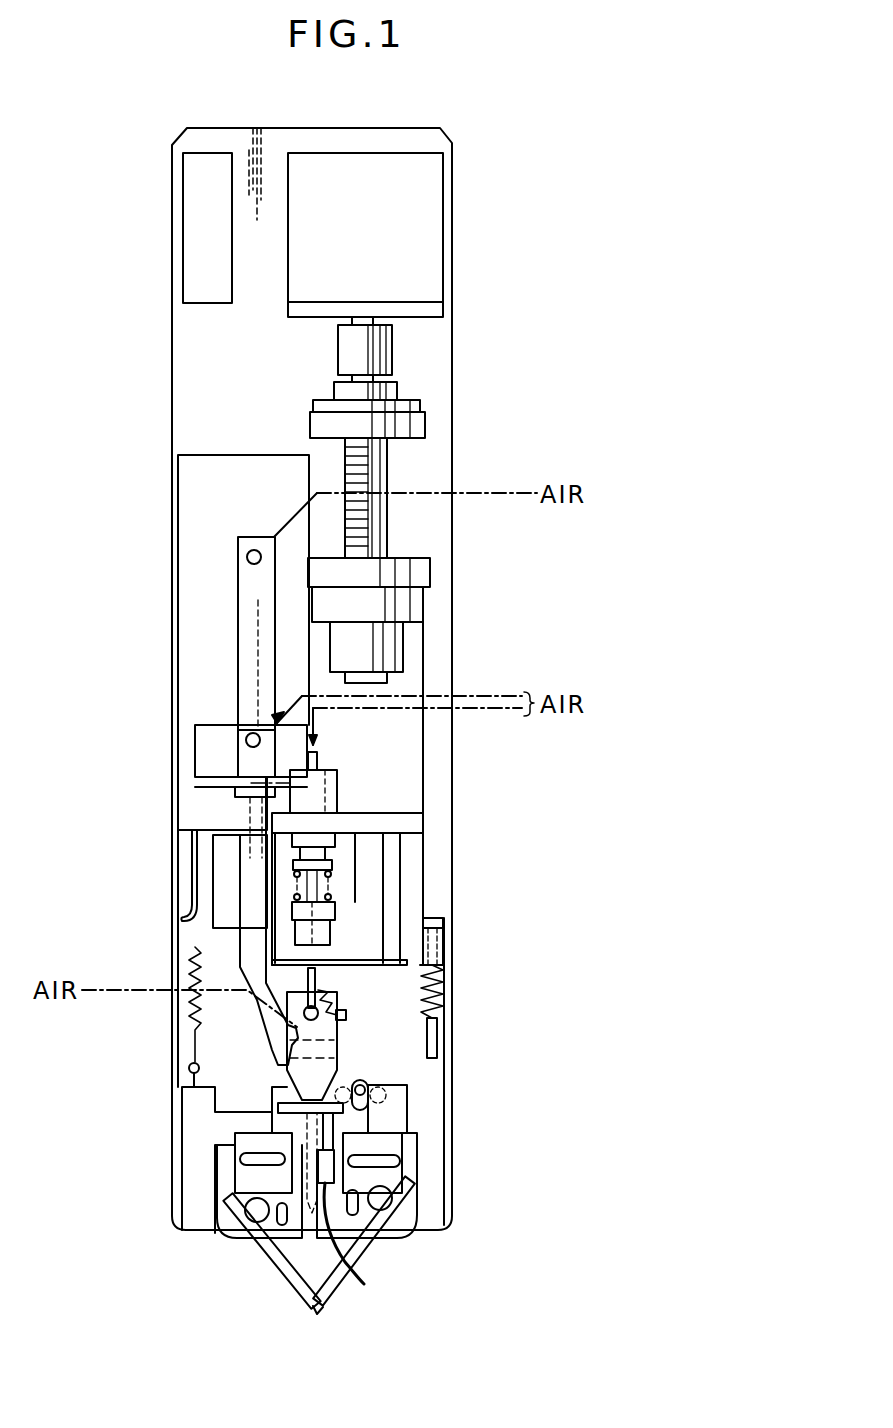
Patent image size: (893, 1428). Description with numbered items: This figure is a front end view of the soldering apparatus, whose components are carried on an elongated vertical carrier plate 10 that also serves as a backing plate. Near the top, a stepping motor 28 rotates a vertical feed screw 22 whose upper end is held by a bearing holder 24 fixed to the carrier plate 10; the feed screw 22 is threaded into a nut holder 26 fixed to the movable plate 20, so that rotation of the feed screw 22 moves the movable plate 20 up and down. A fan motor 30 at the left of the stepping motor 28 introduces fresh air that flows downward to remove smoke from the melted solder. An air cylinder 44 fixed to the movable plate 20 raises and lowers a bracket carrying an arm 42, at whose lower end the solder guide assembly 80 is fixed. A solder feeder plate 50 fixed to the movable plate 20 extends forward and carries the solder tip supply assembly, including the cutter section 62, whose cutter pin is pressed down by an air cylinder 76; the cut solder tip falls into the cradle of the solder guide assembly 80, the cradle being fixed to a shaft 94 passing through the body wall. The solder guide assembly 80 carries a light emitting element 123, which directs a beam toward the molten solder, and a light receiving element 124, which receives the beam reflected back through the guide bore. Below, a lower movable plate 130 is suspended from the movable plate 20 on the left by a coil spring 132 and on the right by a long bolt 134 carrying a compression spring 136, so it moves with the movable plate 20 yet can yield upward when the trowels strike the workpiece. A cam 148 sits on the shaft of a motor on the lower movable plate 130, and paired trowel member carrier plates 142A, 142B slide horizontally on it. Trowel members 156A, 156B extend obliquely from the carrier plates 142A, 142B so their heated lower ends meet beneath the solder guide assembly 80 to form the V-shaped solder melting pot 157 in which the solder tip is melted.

The carrier plate 10 is at (400, 128).
The stepping motor 28 is at (431, 152).
The fan motor 30 is at (182, 270).
The movable plate 20 is at (193, 450).
The bearing holder 24 is at (425, 420).
The feed screw 22 is at (387, 466).
The nut holder 26 is at (403, 642).
The air cylinder 44 is at (238, 630).
The air cylinder 76 is at (338, 783).
The solder feeder plate 50 is at (402, 835).
The cutter section 62 is at (330, 933).
The long bolt 134 is at (440, 920).
The compression spring 136 is at (443, 975).
The light receiving element 124 is at (346, 1015).
The shaft 94 is at (332, 1025).
The cam 148 is at (362, 1080).
The trowel member carrier plate 142B is at (408, 1103).
The trowel member carrier plate 142A is at (215, 1210).
The lower movable plate 130 is at (452, 1160).
The coil spring 132 is at (238, 958).
The arm 42 is at (253, 1017).
The solder guide assembly 80 is at (284, 1069).
The trowel member 156A is at (283, 1277).
The trowel member 156B is at (373, 1238).
The light emitting element 123 is at (350, 1268).
The solder melting pot 157 is at (327, 1307).